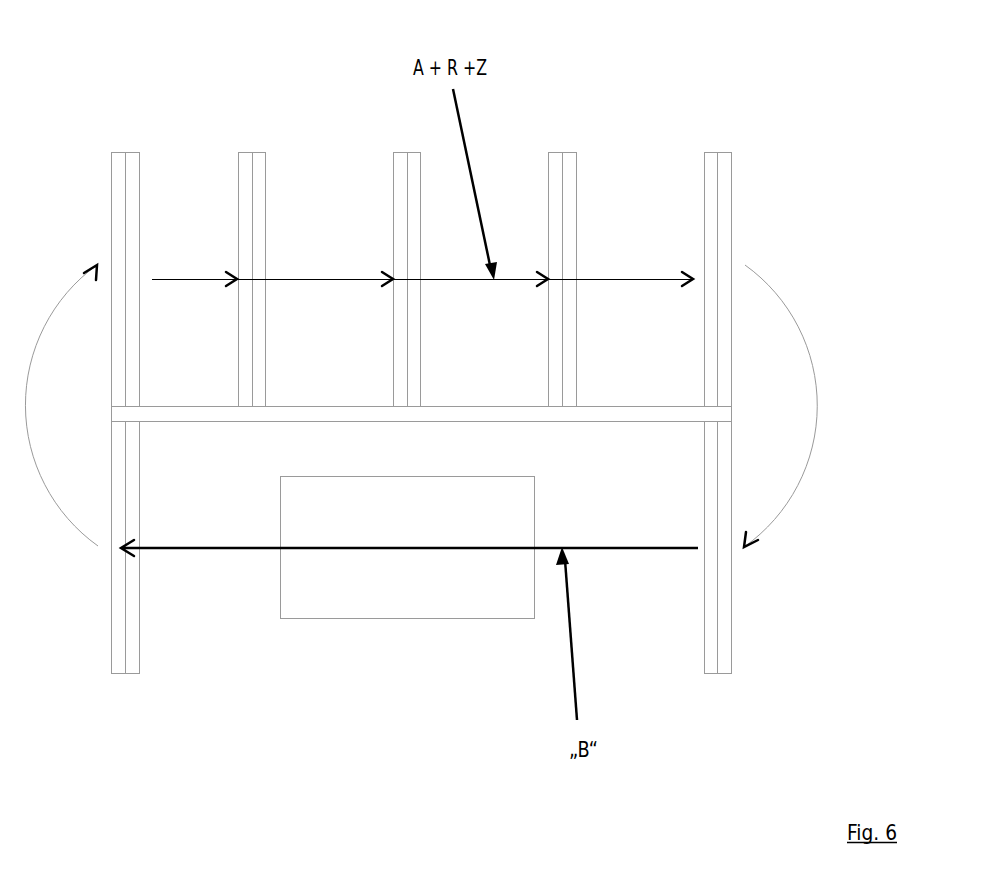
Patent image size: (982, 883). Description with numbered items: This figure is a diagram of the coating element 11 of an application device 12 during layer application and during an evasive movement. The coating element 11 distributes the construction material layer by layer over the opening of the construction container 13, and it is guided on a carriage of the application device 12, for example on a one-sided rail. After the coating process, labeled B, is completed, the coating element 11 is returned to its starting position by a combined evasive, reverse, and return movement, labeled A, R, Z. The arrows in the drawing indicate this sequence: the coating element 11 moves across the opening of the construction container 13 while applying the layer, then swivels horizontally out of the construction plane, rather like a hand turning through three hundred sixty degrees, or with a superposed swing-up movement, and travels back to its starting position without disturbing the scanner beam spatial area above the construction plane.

The coating element 11 is at (251, 185).
The application device 12 is at (730, 563).
The opening of the construction container 13 is at (457, 617).